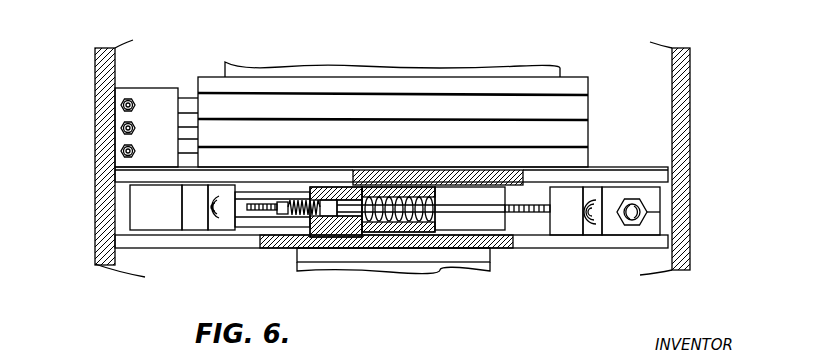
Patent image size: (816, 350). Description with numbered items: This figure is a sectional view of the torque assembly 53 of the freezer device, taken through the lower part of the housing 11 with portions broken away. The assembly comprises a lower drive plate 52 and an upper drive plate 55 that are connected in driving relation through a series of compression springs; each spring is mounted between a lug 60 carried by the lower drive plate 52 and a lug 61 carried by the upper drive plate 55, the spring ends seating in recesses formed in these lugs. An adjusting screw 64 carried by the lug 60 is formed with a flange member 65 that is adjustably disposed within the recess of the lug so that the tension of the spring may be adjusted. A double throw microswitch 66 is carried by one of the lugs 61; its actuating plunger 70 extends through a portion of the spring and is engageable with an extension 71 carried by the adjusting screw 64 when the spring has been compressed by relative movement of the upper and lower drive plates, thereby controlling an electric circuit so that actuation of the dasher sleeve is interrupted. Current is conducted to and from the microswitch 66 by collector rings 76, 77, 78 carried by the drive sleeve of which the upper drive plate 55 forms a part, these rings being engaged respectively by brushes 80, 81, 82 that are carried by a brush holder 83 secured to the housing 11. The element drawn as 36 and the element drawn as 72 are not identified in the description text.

The housing 11 is at (683, 90).
The coil spring 36 is at (378, 200).
The lower drive plate 52 is at (660, 242).
The torque assembly 53 is at (662, 203).
The upper drive plate 55 is at (665, 175).
The lug 60 is at (225, 228).
The lug 61 is at (163, 214).
The adjusting screw 64 is at (281, 205).
The flange member 65 is at (337, 224).
The double throw microswitch 66 is at (488, 215).
The actuating plunger 70 is at (402, 213).
The extension 71 is at (358, 201).
The cover sheet 72 is at (563, 69).
The collector ring 76 is at (582, 108).
The collector ring 77 is at (586, 133).
The collector ring 78 is at (585, 160).
The brush 80 is at (190, 98).
The brush 81 is at (190, 122).
The brush 82 is at (190, 146).
The brush holder 83 is at (143, 92).